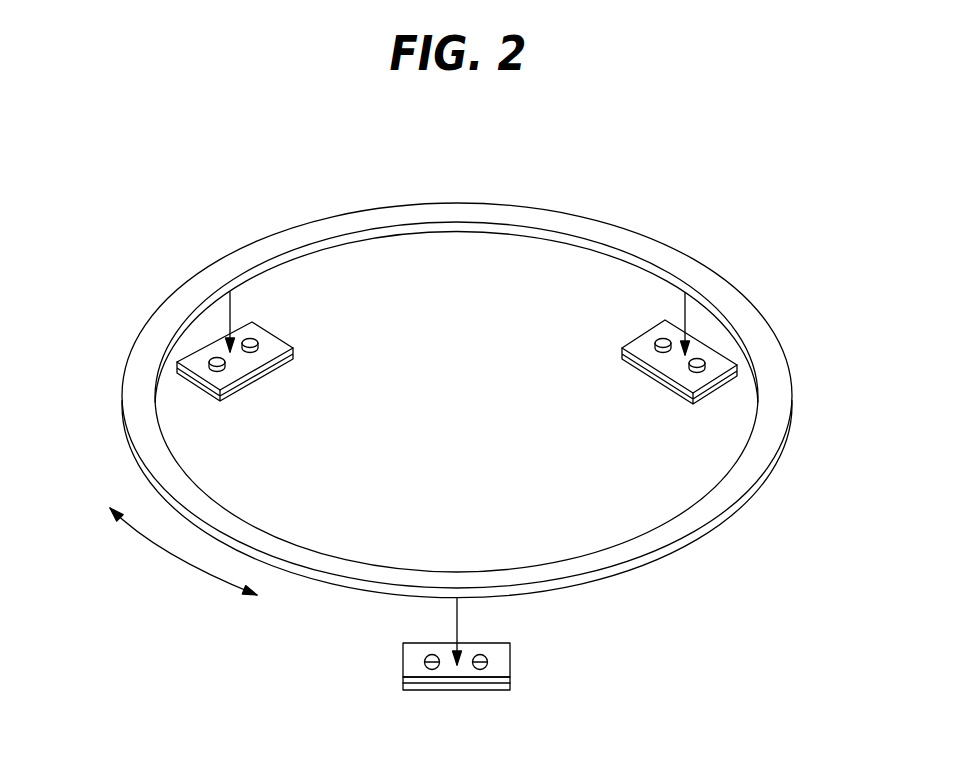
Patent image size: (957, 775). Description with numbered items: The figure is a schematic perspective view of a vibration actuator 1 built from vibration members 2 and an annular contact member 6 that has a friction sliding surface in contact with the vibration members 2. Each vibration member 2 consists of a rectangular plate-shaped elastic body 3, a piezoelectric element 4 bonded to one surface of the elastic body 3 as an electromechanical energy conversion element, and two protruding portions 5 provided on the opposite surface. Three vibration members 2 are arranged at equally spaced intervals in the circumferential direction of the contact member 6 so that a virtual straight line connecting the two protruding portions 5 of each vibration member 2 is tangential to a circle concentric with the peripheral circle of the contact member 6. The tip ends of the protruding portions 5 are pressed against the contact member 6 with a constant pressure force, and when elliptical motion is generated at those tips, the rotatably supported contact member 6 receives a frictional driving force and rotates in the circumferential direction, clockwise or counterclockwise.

The vibration actuator 1 is at (190, 212).
The vibration member 2 is at (590, 647).
The elastic body 3 is at (510, 657).
The piezoelectric element 4 is at (490, 690).
The protruding portion 5 is at (432, 670).
The contact member 6 is at (778, 402).